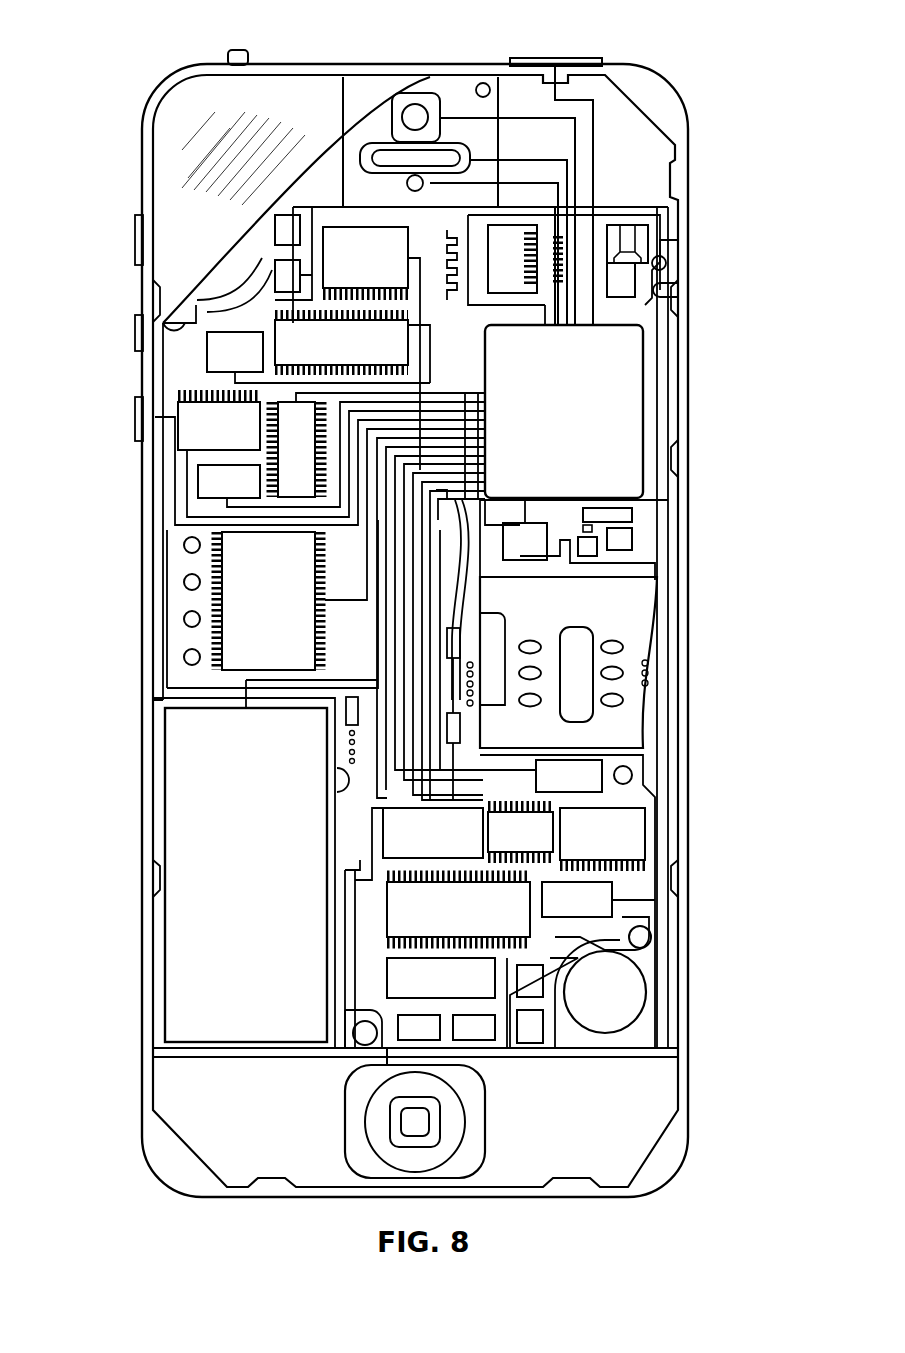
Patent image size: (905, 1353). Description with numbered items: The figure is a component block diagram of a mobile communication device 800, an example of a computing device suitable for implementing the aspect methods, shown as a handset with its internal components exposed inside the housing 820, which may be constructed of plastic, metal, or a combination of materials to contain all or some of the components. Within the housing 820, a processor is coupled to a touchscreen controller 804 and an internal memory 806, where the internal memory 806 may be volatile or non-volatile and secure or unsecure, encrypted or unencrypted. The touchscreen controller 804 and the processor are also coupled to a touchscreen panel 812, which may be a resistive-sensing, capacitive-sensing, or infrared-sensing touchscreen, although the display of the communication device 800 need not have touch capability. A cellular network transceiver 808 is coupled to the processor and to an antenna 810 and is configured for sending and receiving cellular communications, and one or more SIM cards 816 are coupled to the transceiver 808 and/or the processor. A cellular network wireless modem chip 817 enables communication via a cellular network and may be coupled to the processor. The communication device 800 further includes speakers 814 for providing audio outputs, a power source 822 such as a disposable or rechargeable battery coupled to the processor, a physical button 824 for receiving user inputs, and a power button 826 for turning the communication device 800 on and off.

The communication device 800 is at (97, 58).
The touchscreen controller 804 is at (347, 338).
The internal memory 806 is at (272, 614).
The cellular network transceiver 808 is at (587, 238).
The antenna 810 is at (628, 273).
The touchscreen panel 812 is at (180, 160).
The speakers 814 is at (368, 145).
The SIM cards 816 is at (547, 680).
The cellular network wireless modem chip 817 is at (500, 928).
The housing 820 is at (690, 1075).
The power source 822 is at (267, 872).
The physical button 824 is at (430, 1130).
The power button 826 is at (555, 58).